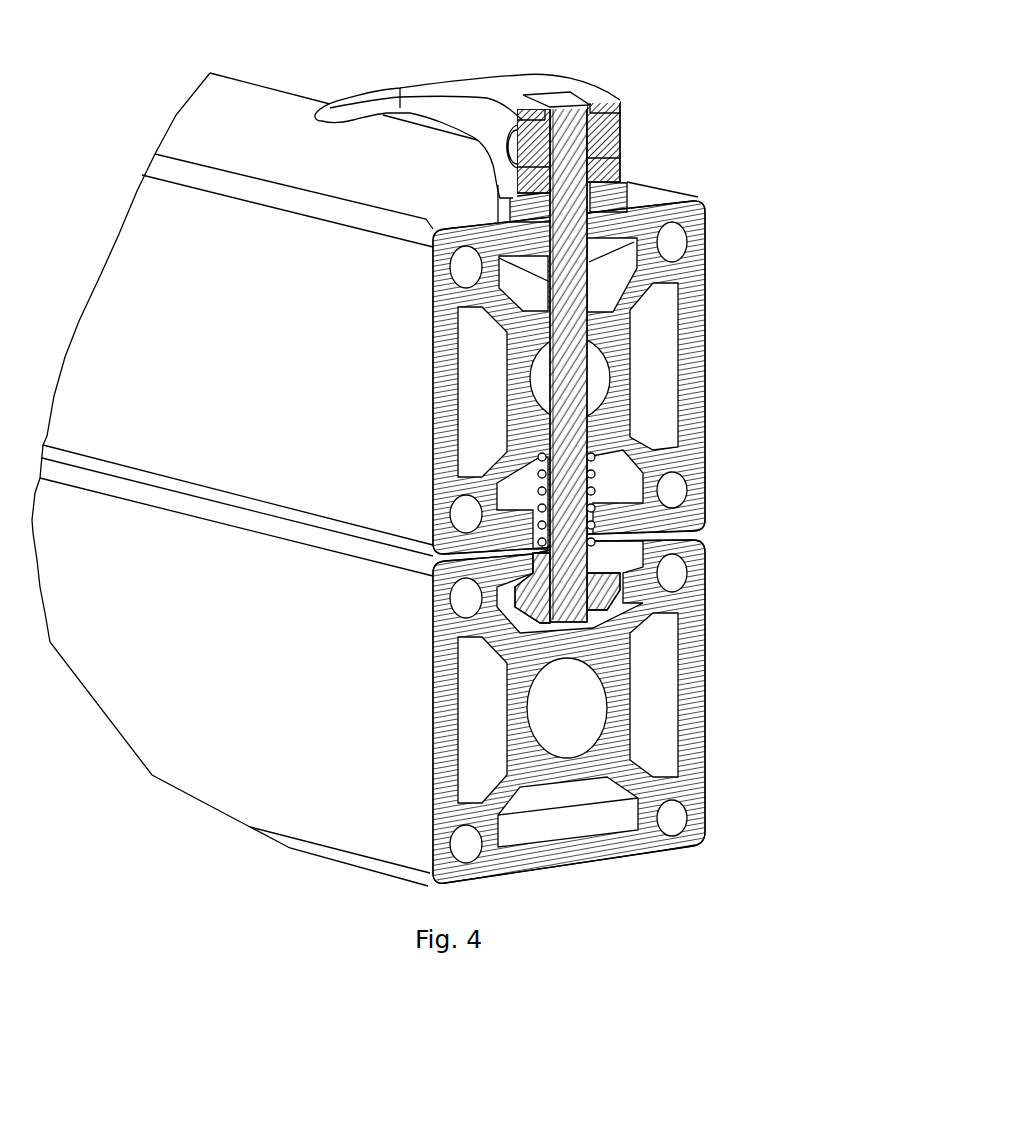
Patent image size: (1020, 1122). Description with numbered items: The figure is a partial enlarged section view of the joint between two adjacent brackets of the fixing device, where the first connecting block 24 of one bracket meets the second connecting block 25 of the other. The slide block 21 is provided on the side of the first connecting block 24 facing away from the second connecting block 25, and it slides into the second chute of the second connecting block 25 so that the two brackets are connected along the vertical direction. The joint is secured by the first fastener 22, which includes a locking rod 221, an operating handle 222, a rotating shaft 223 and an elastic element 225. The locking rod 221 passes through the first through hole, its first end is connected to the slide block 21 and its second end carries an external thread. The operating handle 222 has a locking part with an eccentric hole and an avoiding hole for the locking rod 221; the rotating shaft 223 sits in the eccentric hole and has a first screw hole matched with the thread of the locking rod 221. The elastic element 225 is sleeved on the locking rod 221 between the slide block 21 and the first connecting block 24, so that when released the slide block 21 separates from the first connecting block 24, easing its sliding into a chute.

The first fastener 22 is at (492, 85).
The operating handle 222 is at (548, 82).
The locking rod 221 is at (585, 103).
The rotating shaft 223 is at (615, 138).
The first connecting block 24 is at (705, 318).
The elastic element 225 is at (587, 478).
The slide block 21 is at (705, 572).
The second connecting block 25 is at (705, 735).